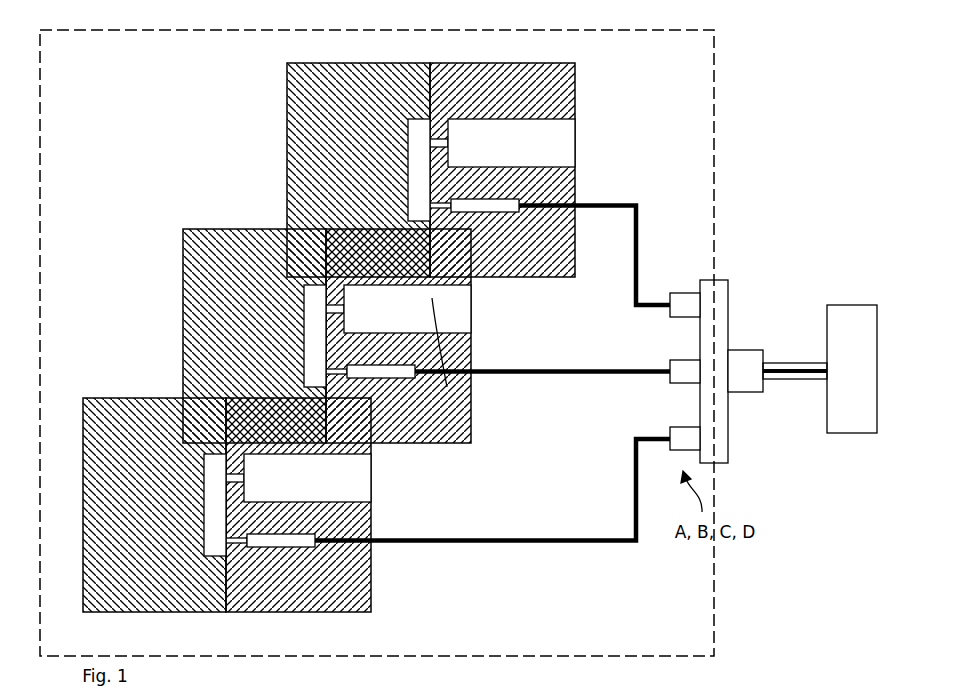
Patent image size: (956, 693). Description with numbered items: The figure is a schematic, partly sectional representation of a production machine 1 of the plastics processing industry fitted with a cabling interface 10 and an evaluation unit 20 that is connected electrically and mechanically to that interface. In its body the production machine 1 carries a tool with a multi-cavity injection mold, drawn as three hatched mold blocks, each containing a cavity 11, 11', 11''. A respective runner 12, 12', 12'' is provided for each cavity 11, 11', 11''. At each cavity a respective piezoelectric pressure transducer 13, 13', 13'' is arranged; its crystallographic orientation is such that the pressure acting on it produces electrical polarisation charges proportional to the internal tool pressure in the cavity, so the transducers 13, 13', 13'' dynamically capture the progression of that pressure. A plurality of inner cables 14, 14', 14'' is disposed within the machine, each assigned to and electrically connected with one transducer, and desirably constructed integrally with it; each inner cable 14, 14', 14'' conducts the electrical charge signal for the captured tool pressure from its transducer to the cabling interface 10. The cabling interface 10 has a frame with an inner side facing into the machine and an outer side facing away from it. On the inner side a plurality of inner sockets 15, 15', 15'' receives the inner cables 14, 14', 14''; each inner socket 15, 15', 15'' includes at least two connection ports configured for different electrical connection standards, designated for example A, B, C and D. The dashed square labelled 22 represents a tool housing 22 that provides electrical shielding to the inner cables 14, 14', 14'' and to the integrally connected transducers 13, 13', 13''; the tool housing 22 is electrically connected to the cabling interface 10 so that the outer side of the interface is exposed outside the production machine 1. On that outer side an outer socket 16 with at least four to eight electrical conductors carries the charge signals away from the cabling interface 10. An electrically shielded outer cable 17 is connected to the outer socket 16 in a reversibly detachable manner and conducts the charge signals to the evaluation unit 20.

The production machine 1 is at (786, 172).
The cabling interface 10 is at (722, 312).
The cavity 11 is at (326, 170).
The cavity 11' is at (222, 332).
The cavity 11'' is at (219, 554).
The runner 12 is at (511, 143).
The runner 12' is at (407, 309).
The runner 12'' is at (307, 478).
The piezoelectric pressure transducer 13 is at (490, 260).
The piezoelectric pressure transducer 13' is at (389, 422).
The piezoelectric pressure transducer 13'' is at (288, 594).
The inner cable 14 is at (594, 256).
The inner cable 14' is at (542, 406).
The inner cable 14'' is at (492, 523).
The inner socket 15 is at (672, 287).
The inner socket 15' is at (671, 353).
The inner socket 15'' is at (672, 420).
The outer socket 16 is at (742, 375).
The outer cable 17 is at (783, 375).
The evaluation unit 20 is at (841, 381).
The tool housing 22 is at (715, 78).